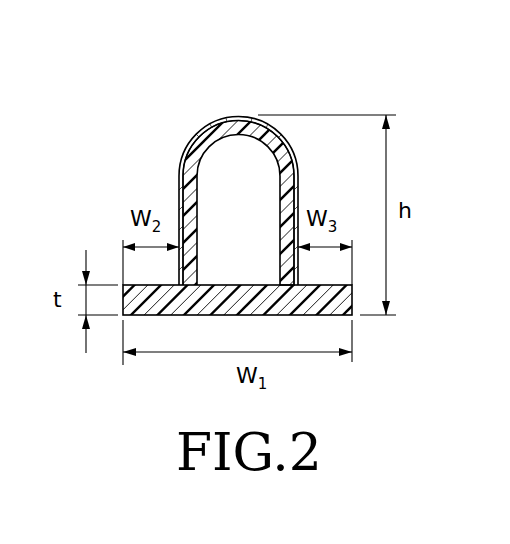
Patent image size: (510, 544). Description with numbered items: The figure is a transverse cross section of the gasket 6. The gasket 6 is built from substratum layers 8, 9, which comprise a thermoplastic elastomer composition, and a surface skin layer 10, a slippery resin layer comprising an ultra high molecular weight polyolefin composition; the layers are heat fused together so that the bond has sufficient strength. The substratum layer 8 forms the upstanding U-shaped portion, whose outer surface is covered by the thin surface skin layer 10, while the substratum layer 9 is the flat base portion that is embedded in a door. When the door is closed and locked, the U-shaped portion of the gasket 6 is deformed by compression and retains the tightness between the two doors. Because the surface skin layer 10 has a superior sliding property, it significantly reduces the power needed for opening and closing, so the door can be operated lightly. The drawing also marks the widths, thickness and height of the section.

The gasket 6 is at (244, 204).
The substratum layer 8 is at (192, 190).
The substratum layer 9 is at (172, 316).
The surface skin layer 10 is at (190, 150).